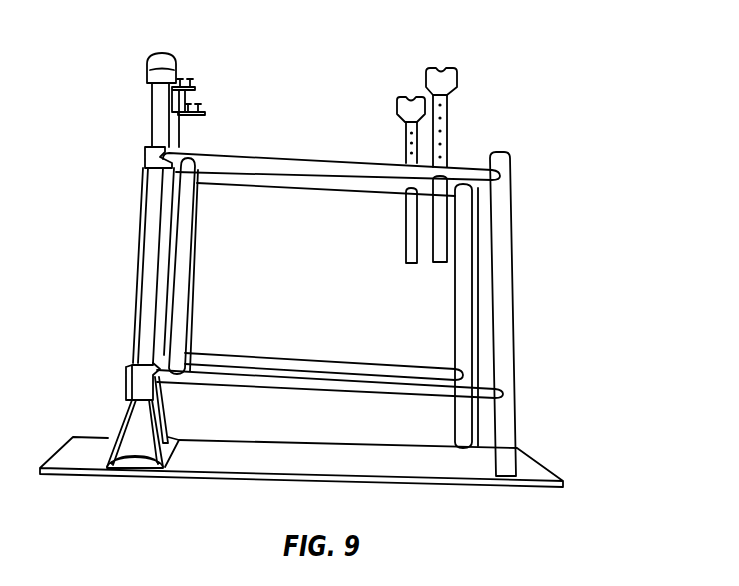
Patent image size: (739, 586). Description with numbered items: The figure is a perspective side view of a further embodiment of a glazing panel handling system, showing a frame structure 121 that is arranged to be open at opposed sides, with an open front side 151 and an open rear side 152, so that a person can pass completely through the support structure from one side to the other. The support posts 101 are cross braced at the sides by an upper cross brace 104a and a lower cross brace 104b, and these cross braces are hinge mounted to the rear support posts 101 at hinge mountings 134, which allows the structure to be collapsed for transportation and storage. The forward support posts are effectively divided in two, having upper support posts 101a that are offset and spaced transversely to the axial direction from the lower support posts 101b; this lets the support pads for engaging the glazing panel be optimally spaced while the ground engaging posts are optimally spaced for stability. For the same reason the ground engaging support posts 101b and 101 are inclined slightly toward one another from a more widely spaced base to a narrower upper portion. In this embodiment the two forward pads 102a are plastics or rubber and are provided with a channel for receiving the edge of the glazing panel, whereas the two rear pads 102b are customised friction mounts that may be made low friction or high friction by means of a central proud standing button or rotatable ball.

The support post 101 is at (141, 212).
The upper support post 101a is at (448, 133).
The lower support post 101b is at (504, 246).
The forward pad 102a is at (405, 100).
The rear pad 102b is at (147, 72).
The upper cross brace 104a is at (310, 163).
The lower cross brace 104b is at (277, 362).
The frame structure 121 is at (457, 36).
The hinge mounting 134 is at (146, 157).
The open front side 151 is at (540, 302).
The open rear side 152 is at (111, 285).